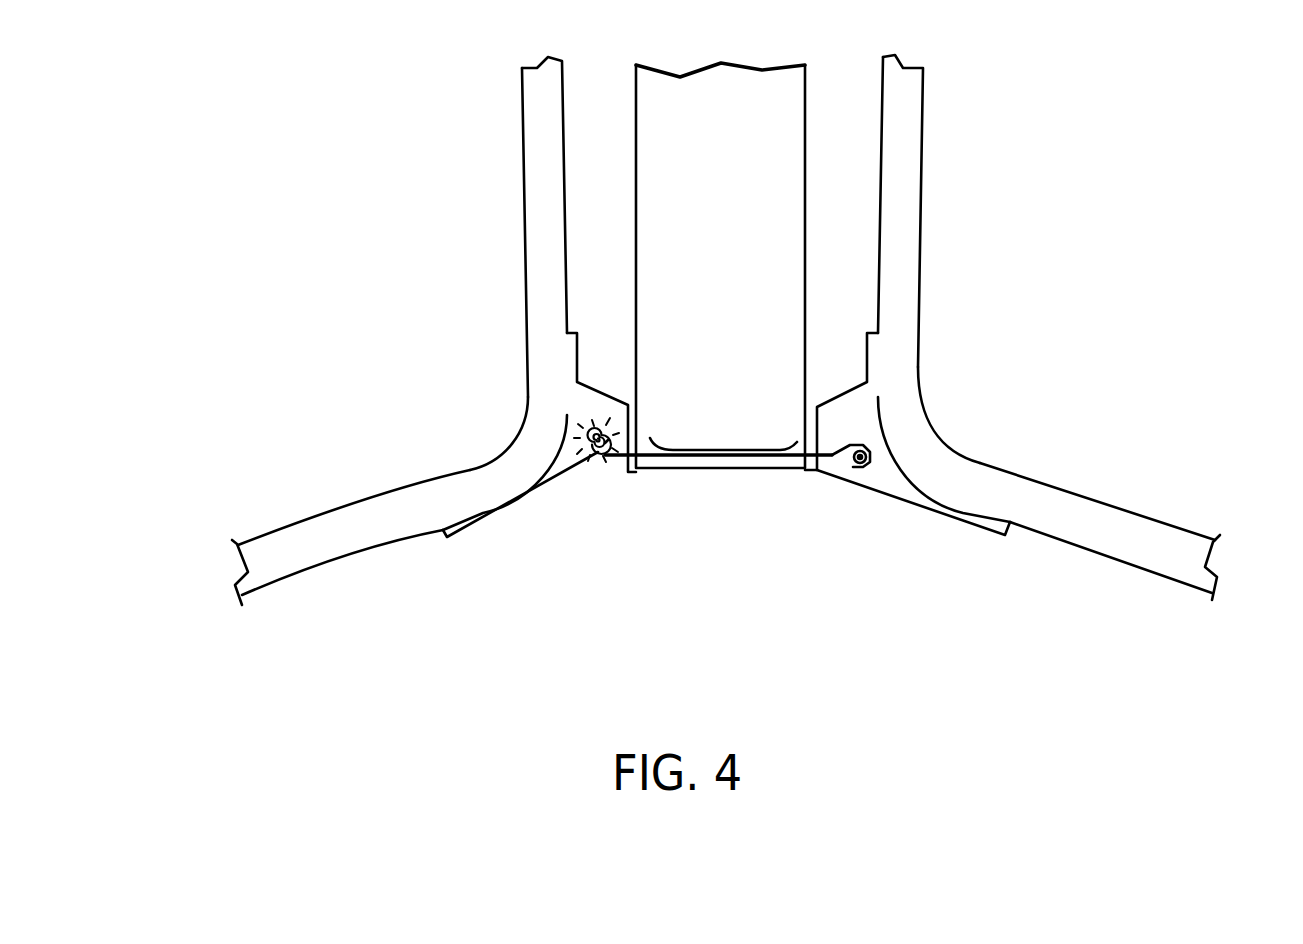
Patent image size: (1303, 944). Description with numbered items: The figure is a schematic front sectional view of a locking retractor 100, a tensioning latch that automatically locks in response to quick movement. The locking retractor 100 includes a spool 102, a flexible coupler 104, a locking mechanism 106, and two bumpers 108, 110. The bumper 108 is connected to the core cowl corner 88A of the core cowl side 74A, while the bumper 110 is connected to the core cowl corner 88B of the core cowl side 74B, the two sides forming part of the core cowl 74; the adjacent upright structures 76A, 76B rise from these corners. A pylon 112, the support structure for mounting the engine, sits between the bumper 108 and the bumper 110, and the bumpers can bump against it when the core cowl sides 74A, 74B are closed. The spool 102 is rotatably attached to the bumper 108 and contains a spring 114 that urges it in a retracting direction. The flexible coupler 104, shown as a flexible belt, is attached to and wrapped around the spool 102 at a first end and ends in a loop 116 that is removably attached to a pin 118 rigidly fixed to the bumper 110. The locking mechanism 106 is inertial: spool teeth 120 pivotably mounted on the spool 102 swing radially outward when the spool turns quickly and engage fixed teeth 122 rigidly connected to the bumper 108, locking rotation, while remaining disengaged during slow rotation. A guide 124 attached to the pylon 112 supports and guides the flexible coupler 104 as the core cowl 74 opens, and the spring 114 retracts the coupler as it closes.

The core cowl 74 is at (240, 505).
The core cowl side 74A is at (342, 497).
The core cowl side 74B is at (1165, 505).
The left upright tube 76A is at (522, 140).
The right upright tube 76B is at (922, 122).
The core cowl corner 88A is at (510, 437).
The core cowl corner 88B is at (933, 420).
The locking retractor 100 is at (577, 547).
The spool 102 is at (614, 414).
The flexible coupler 104 is at (705, 468).
The locking mechanism 106 is at (562, 412).
The bumper 108 is at (533, 512).
The bumper 110 is at (937, 512).
The pylon 112 is at (636, 305).
The spring 114 is at (608, 440).
The loop 116 is at (833, 467).
The pin 118 is at (853, 468).
The spool teeth 120 is at (601, 455).
The fixed teeth 122 is at (592, 415).
The guide 124 is at (785, 445).